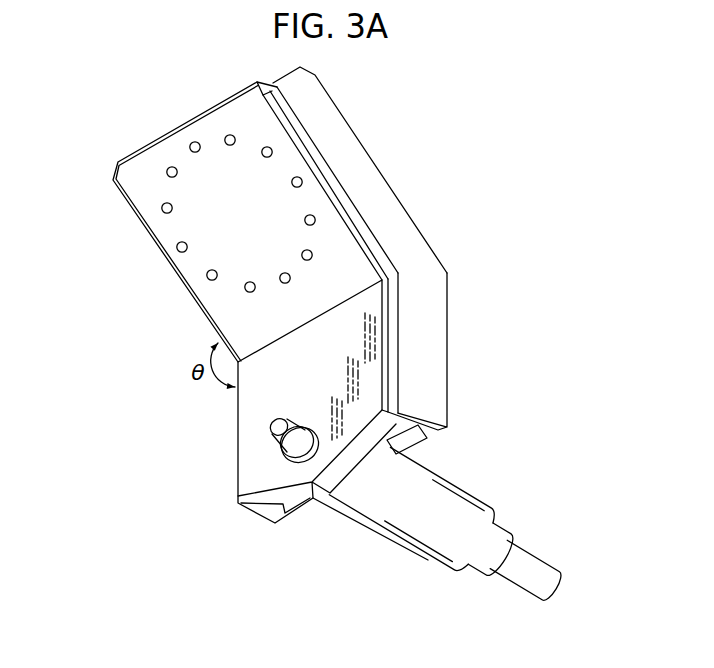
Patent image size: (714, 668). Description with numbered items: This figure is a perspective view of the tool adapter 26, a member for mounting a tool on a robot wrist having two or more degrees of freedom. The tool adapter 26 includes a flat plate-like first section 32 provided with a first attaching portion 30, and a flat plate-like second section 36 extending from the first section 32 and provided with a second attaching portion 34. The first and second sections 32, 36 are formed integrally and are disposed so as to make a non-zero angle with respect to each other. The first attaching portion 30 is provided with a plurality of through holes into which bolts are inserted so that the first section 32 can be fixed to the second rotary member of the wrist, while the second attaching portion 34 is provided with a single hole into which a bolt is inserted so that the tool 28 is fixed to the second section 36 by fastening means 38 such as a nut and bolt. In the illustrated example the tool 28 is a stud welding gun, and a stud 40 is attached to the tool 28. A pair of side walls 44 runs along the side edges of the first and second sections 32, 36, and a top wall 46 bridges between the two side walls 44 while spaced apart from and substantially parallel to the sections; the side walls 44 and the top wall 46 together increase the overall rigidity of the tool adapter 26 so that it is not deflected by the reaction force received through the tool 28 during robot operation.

The tool adapter 26 is at (390, 179).
The side walls 44 is at (415, 355).
The first section 32 is at (145, 188).
The first attaching portion 30 is at (212, 280).
The second section 36 is at (260, 403).
The fastening means 38 is at (288, 458).
The second attaching portion 34 is at (302, 472).
The top wall 46 is at (432, 452).
The tool 28 is at (418, 556).
The stud 40 is at (550, 560).